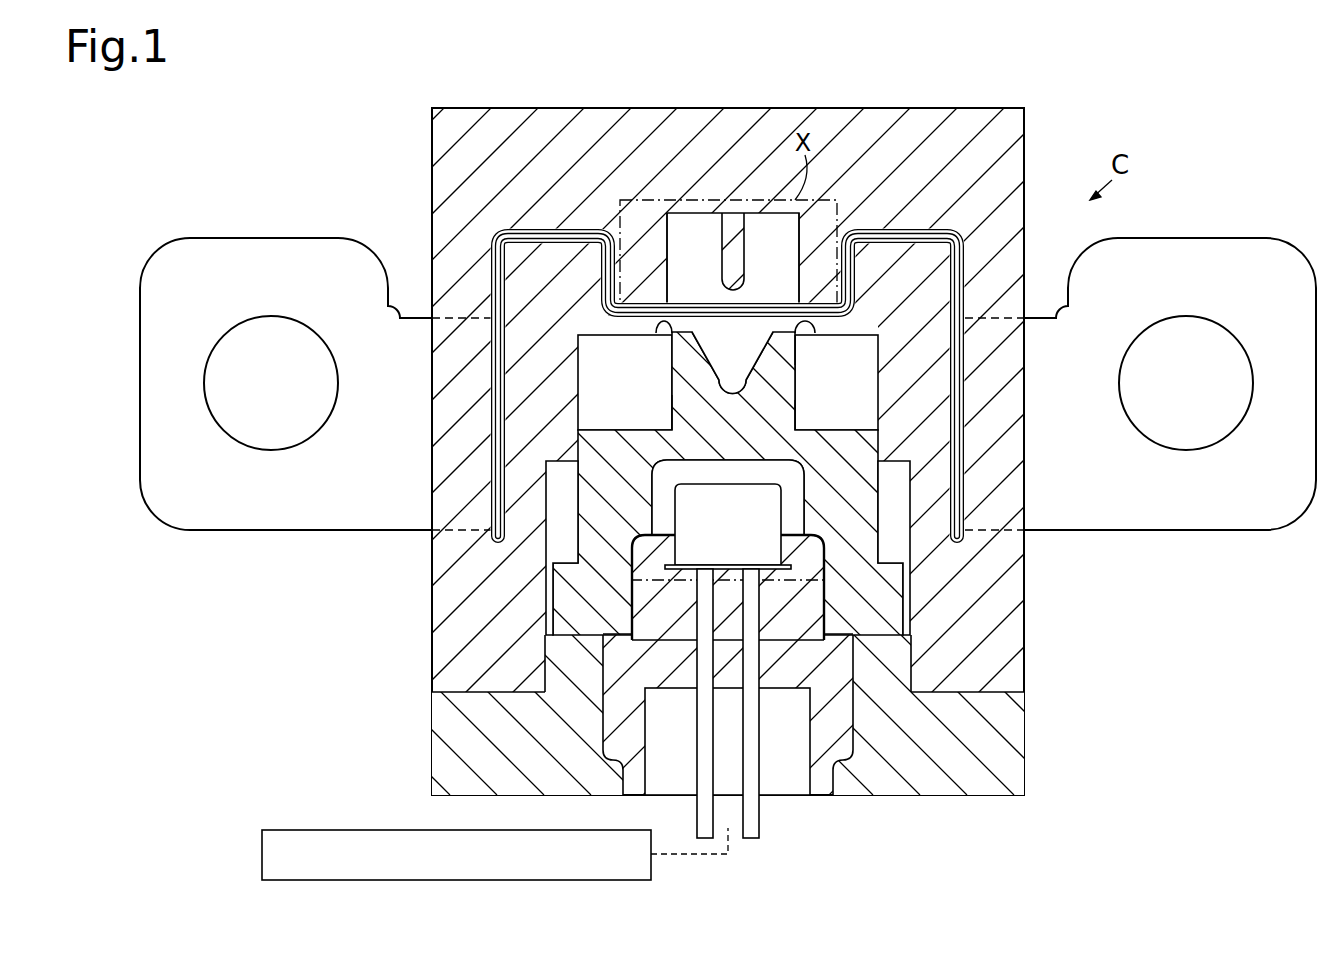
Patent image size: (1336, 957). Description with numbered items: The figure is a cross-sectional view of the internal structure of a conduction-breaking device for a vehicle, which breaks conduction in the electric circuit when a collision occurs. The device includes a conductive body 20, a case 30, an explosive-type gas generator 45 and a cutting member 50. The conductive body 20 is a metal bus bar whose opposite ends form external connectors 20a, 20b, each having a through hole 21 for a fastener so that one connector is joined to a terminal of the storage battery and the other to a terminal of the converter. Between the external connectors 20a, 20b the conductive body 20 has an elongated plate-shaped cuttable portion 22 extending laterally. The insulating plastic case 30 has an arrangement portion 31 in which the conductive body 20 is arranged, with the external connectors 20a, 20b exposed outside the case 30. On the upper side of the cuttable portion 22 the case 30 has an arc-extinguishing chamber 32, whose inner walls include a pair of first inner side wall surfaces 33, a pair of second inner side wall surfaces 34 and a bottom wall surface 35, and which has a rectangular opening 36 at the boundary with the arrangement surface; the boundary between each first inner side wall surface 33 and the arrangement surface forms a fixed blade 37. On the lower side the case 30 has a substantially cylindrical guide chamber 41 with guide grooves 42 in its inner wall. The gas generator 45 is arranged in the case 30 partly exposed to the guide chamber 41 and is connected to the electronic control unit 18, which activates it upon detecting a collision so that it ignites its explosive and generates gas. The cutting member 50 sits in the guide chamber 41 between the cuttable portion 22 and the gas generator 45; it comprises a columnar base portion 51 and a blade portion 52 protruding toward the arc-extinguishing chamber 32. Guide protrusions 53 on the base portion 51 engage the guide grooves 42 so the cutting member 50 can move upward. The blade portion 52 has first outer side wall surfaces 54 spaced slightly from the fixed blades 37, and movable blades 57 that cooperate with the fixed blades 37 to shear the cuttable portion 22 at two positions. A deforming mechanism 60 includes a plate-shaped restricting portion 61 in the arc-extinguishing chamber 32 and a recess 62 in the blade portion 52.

The electronic control unit 18 is at (262, 855).
The conductive body 20 is at (1068, 531).
The external connector 20a is at (268, 238).
The external connector 20b is at (1180, 238).
The through hole 21 is at (270, 450).
The cuttable portion 22 is at (805, 312).
The case 30 is at (1026, 148).
The arrangement portion 31 is at (965, 282).
The arc-extinguishing chamber 32 is at (678, 259).
The first inner side wall surface 33 is at (669, 212).
The second inner side wall surface 34 is at (850, 235).
The bottom wall surface 35 is at (748, 212).
The opening 36 is at (760, 305).
The fixed blade 37 is at (668, 290).
The guide chamber 41 is at (578, 372).
The guide groove 42 is at (553, 520).
The gas generator 45 is at (777, 570).
The cutting member 50 is at (833, 360).
The base portion 51 is at (805, 440).
The blade portion 52 is at (793, 338).
The guide protrusion 53 is at (580, 614).
The first outer side wall surface 54 is at (672, 410).
The movable blade 57 is at (662, 330).
The deforming mechanism 60 is at (728, 550).
The restricting portion 61 is at (728, 320).
The recess 62 is at (733, 395).